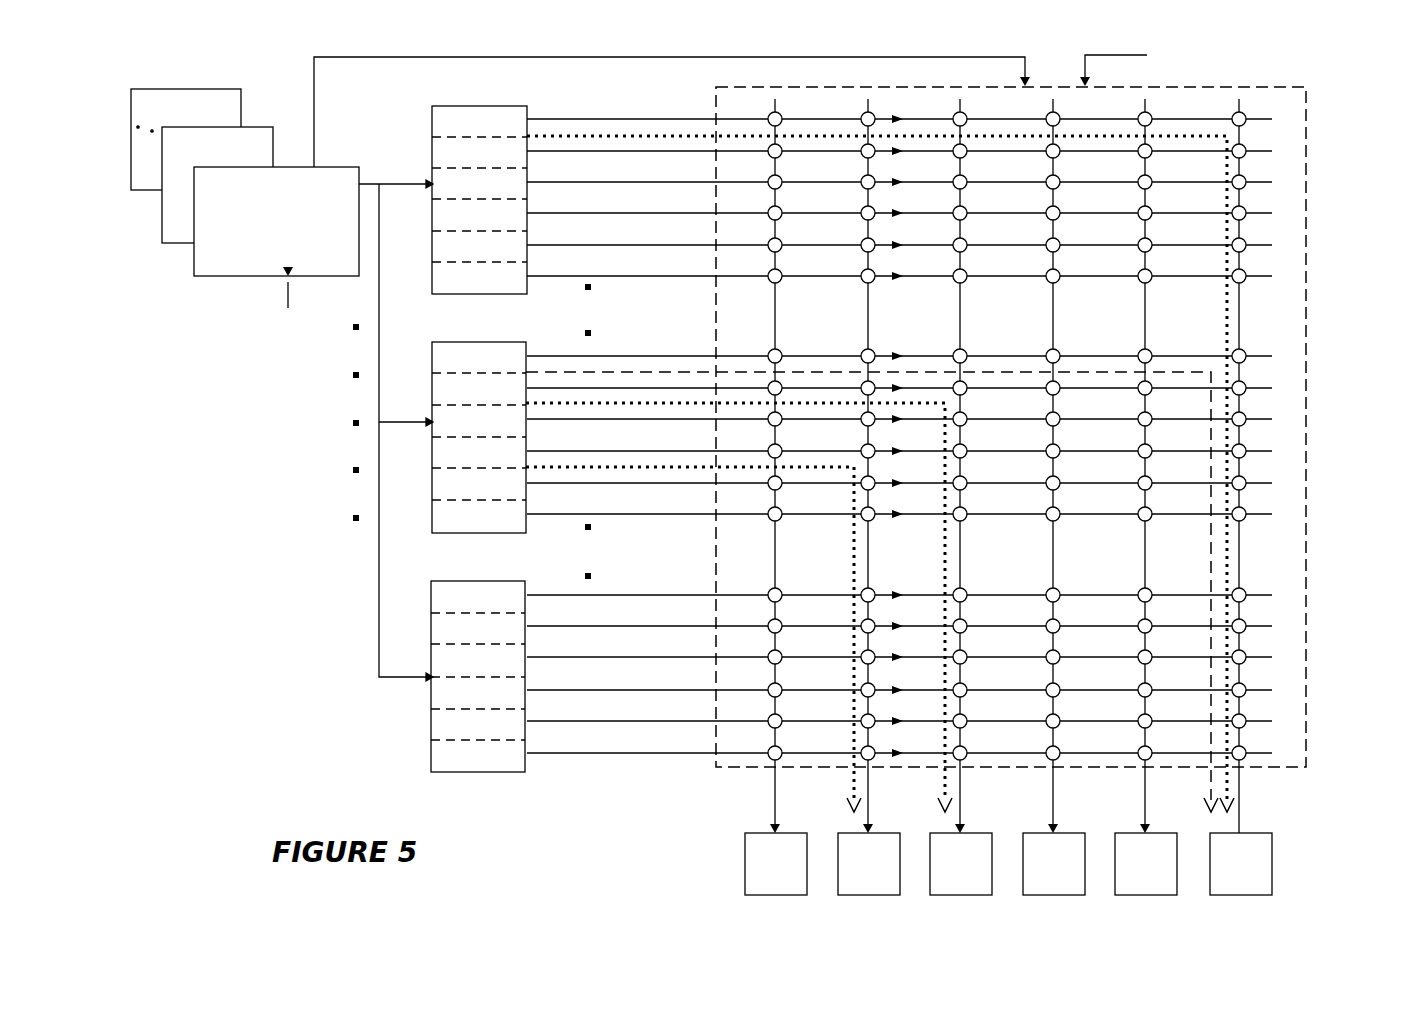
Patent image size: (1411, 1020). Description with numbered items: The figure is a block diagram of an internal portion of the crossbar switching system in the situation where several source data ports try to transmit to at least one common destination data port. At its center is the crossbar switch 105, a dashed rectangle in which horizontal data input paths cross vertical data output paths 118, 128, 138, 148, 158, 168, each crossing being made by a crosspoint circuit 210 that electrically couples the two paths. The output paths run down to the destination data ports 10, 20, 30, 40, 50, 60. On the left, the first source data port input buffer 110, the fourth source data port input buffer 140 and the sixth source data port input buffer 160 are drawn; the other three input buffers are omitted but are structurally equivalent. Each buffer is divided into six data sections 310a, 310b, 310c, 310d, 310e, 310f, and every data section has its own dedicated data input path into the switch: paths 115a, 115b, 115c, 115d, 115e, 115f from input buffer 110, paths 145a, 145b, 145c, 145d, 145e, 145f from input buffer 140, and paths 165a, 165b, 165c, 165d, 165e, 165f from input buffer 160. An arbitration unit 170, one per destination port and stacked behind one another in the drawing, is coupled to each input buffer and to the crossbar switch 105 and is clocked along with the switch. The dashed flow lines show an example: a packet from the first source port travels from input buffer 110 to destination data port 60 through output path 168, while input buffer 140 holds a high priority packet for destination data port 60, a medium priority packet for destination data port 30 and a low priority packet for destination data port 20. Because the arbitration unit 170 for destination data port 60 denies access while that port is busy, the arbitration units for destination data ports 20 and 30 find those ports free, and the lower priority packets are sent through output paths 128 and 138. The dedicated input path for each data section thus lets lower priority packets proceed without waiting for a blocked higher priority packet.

The destination data port 1 10 is at (766, 896).
The destination data port 2 20 is at (866, 896).
The destination data port 3 30 is at (961, 896).
The destination data port 4 40 is at (1057, 896).
The destination data port 5 50 is at (1146, 896).
The destination data port 6 60 is at (1256, 896).
The crossbar switch 105 is at (1045, 86).
The source data port 1 input buffer 110 is at (476, 106).
The source data port 4 input buffer 140 is at (498, 342).
The source data port 6 input buffer 160 is at (462, 581).
The arbitration unit 170 is at (326, 167).
The crosspoint circuit 210 is at (1248, 112).
The data input path 115a is at (658, 119).
The data input path 115b is at (683, 151).
The data input path 115c is at (658, 182).
The data input path 115d is at (660, 213).
The data input path 115e is at (660, 245).
The data input path 115f is at (658, 276).
The data input path 145a is at (700, 356).
The data input path 145b is at (683, 388).
The data input path 145c is at (606, 419).
The data input path 145d is at (690, 451).
The data input path 145e is at (606, 483).
The data input path 145f is at (690, 514).
The data input path 165a is at (705, 595).
The data input path 165b is at (645, 626).
The data input path 165c is at (645, 657).
The data input path 165d is at (645, 690).
The data input path 165e is at (645, 721).
The data input path 165f is at (645, 753).
The data section 310a is at (440, 120).
The data section 310b is at (435, 627).
The data section 310c is at (435, 658).
The data section 310d is at (435, 692).
The data section 310e is at (435, 723).
The data section 310f is at (435, 754).
The data output path 118 is at (773, 788).
The data output path 128 is at (868, 806).
The data output path 138 is at (962, 803).
The data output path 148 is at (1050, 789).
The data output path 158 is at (1141, 788).
The data output path 168 is at (1242, 778).